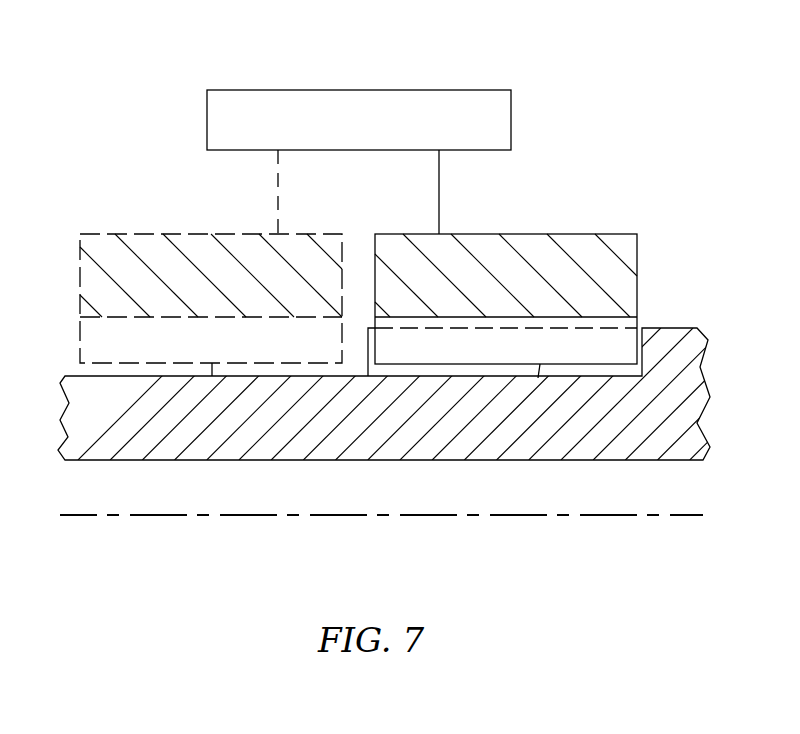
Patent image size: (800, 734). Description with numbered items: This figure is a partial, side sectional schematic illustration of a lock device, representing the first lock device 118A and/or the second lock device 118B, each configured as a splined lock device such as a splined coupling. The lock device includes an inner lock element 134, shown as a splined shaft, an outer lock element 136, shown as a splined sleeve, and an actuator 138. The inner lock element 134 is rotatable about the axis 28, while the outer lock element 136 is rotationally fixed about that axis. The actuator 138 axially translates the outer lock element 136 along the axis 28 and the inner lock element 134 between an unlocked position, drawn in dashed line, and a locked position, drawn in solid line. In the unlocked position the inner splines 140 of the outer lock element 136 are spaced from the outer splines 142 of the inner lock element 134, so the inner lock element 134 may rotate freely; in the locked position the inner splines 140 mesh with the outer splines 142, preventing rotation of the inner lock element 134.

The first lock device 118A is at (391, 233).
The second lock device 118B is at (506, 299).
The inner lock element 134 is at (710, 387).
The outer lock element 136 is at (386, 284).
The actuator 138 is at (521, 125).
The inner splines 140 is at (212, 376).
The outer splines 142 is at (577, 328).
The axis 28 is at (693, 515).